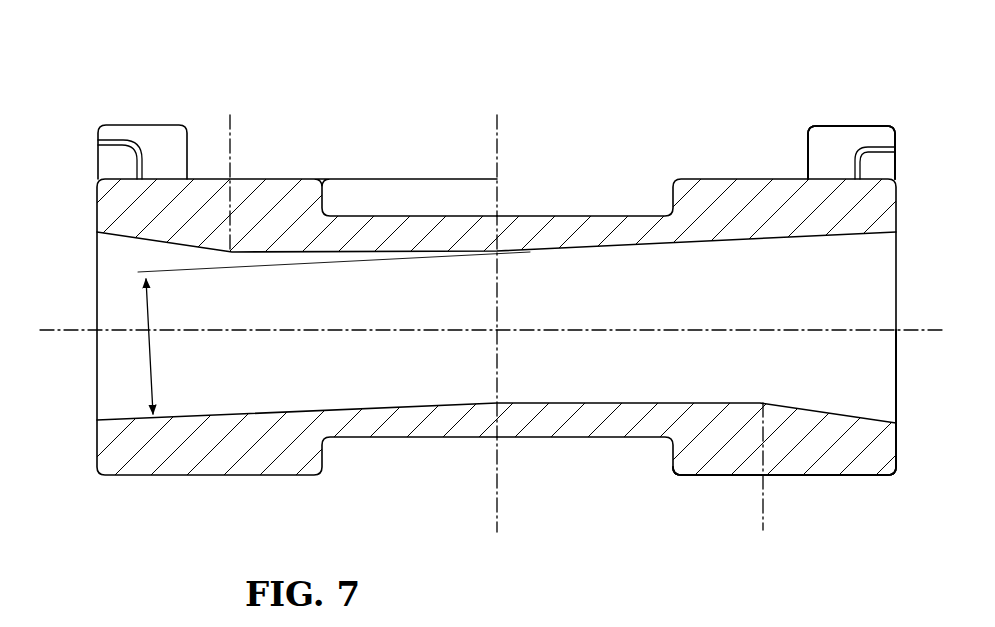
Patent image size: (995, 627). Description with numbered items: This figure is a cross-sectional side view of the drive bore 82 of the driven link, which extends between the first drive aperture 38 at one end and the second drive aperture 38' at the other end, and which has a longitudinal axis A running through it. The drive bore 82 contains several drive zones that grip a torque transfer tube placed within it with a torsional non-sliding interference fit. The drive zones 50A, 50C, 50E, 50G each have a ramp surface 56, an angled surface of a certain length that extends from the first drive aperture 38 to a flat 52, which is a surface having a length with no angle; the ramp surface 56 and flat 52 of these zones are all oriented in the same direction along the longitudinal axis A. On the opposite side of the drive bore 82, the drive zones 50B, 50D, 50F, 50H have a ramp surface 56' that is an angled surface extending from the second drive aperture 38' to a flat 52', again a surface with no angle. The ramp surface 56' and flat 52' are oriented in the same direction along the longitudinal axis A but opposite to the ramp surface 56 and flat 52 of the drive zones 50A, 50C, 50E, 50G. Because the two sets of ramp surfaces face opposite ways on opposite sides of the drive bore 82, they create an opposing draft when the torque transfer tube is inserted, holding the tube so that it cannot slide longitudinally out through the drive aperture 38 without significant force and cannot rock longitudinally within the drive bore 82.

The first drive aperture 38 is at (720, 254).
The second drive aperture 38' is at (274, 327).
The flat 52 is at (363, 189).
The flat 52' is at (630, 459).
The ramp surface 56 is at (496, 187).
The ramp surface 56' is at (496, 471).
The drive bore 82 is at (582, 268).
The longitudinal axis A is at (927, 333).
The drive zone 50A is at (904, 164).
The drive zone 50C is at (882, 112).
The drive zone 50E is at (858, 123).
The drive zone 50G is at (880, 123).
The drive zone 50B is at (904, 448).
The drive zone 50D is at (811, 437).
The drive zone 50F is at (785, 448).
The drive zone 50H is at (809, 448).